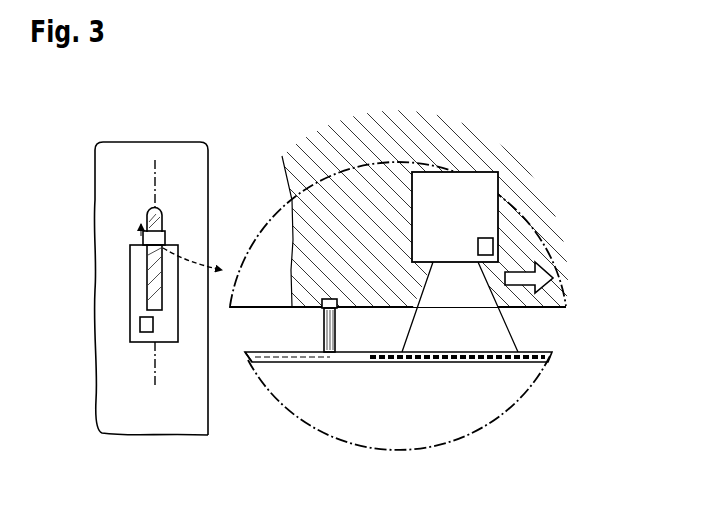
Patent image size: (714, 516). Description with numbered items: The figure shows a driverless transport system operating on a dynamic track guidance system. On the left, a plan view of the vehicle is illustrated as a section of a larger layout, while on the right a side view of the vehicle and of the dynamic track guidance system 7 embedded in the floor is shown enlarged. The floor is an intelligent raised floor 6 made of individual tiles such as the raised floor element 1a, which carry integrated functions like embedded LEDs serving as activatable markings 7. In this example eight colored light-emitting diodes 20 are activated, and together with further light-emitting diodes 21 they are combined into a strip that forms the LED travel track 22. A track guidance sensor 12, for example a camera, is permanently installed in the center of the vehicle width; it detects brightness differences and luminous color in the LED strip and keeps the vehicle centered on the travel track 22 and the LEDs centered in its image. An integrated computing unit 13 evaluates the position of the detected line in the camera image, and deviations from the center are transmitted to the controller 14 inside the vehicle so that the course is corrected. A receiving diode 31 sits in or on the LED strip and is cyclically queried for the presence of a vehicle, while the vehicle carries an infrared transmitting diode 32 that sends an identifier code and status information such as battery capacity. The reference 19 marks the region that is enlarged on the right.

The raised floor element 1a is at (145, 408).
The raised floor 6 is at (484, 424).
The activatable markings 7 is at (559, 370).
The track guidance sensor 12 is at (488, 185).
The integrated computing unit 13 is at (485, 247).
The controller 14 is at (140, 324).
The detail region 19 is at (160, 208).
The light-emitting diodes 20 is at (548, 352).
The light-emitting diodes 21 is at (245, 353).
The LED travel track 22 is at (153, 178).
The receiving diode 31 is at (329, 365).
The infrared transmitting diode 32 is at (318, 294).